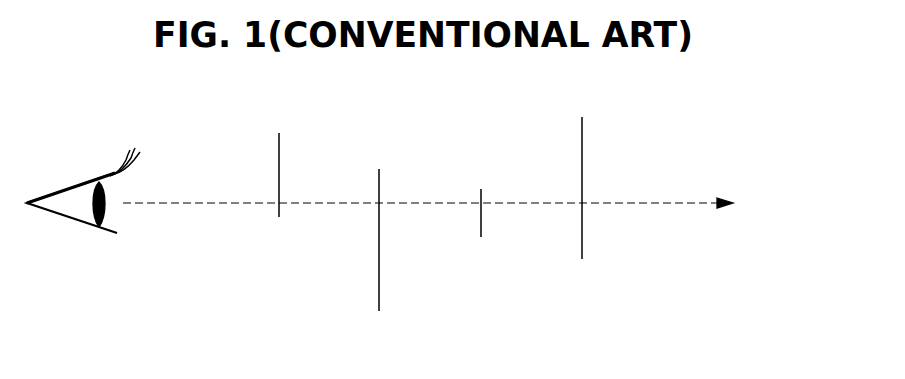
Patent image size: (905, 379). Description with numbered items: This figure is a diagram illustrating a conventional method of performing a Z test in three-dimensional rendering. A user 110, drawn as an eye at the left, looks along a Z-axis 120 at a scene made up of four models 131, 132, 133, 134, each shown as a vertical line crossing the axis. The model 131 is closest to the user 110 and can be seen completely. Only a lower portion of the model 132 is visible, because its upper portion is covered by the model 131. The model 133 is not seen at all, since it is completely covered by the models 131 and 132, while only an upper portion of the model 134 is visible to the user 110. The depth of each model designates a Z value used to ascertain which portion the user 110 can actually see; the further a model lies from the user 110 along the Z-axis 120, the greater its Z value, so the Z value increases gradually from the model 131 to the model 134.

The user 110 is at (83, 214).
The Z-axis 120 is at (478, 205).
The model 131 is at (278, 200).
The model 132 is at (379, 264).
The model 133 is at (481, 237).
The model 134 is at (580, 212).